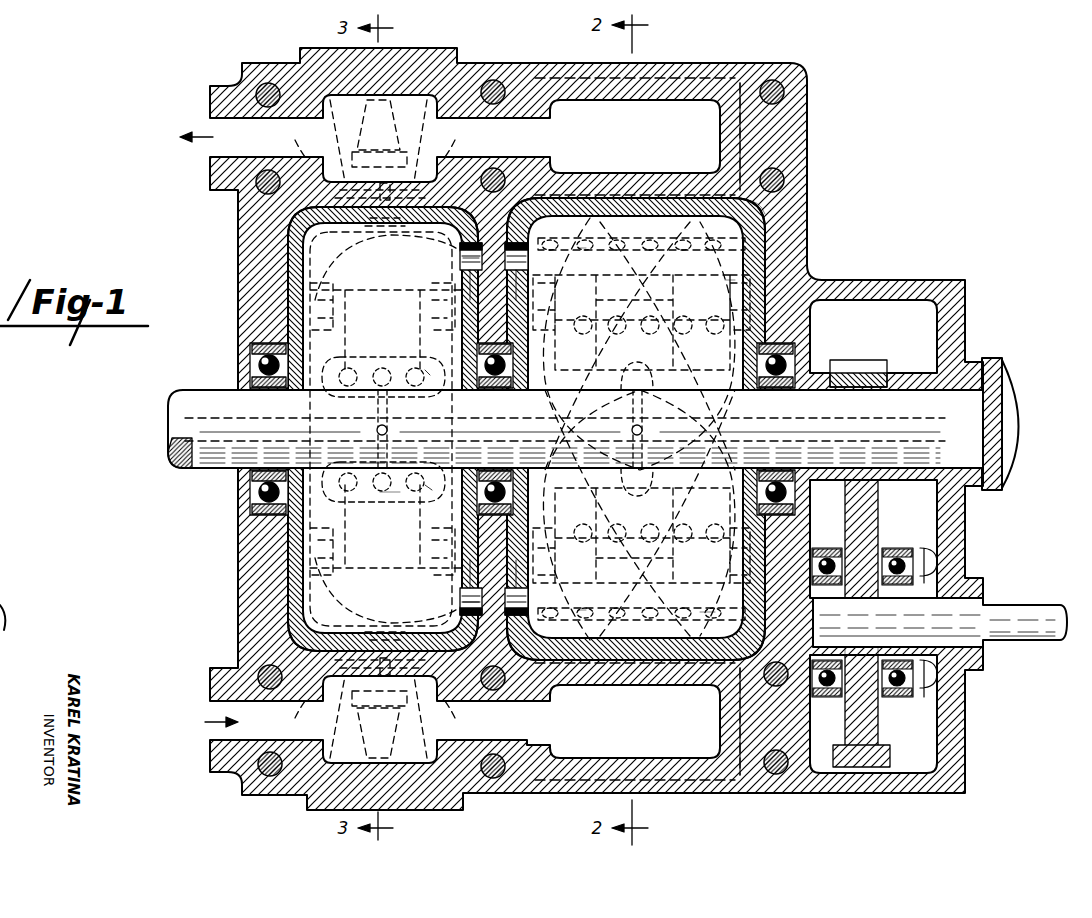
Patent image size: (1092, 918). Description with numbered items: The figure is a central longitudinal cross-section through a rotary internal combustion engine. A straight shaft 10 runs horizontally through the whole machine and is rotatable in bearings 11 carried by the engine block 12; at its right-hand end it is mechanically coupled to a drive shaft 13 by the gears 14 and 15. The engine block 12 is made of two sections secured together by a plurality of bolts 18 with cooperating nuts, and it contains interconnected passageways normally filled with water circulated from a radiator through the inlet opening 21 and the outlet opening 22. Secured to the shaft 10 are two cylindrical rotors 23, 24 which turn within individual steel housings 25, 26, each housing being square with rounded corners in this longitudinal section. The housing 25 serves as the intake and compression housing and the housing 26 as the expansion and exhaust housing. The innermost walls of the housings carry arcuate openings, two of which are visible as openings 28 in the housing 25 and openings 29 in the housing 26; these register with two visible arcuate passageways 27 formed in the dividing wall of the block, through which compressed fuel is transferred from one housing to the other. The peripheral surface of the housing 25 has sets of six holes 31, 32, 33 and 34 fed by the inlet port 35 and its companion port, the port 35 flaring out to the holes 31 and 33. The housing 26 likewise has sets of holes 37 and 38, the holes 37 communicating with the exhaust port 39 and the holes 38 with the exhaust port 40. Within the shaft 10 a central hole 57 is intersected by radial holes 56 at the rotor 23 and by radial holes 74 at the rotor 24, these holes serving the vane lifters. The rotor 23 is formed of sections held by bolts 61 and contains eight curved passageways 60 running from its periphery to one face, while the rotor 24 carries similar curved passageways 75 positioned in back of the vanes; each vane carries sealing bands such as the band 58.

The straight shaft 10 is at (210, 390).
The bearings 11 is at (250, 353).
The engine block 12 is at (810, 97).
The drive shaft 13 is at (1040, 604).
The gear 14 is at (866, 360).
The gear 15 is at (872, 767).
The bolts 18 is at (266, 84).
The inlet opening 21 is at (212, 740).
The outlet opening 22 is at (208, 150).
The cylindrical rotor 23 is at (742, 243).
The cylindrical rotor 24 is at (296, 252).
The intake and compression housing 25 is at (752, 222).
The expansion and exhaust housing 26 is at (290, 598).
The arcuate passageways 27 is at (484, 245).
The arcuate openings 28 is at (513, 272).
The arcuate openings 29 is at (462, 262).
The holes 31 is at (712, 245).
The holes 32 is at (718, 334).
The holes 33 is at (688, 528).
The holes 34 is at (710, 612).
The inlet port 35 is at (620, 385).
The holes 37 is at (410, 368).
The holes 38 is at (412, 492).
The exhaust port 39 is at (432, 372).
The exhaust port 40 is at (432, 488).
The radial holes 56 is at (645, 437).
The central hole 57 is at (228, 446).
The sealing band 58 is at (766, 206).
The curved passageways 60 is at (582, 250).
The bolts 61 is at (730, 282).
The radial holes 74 is at (388, 440).
The curved passageways 75 is at (390, 232).